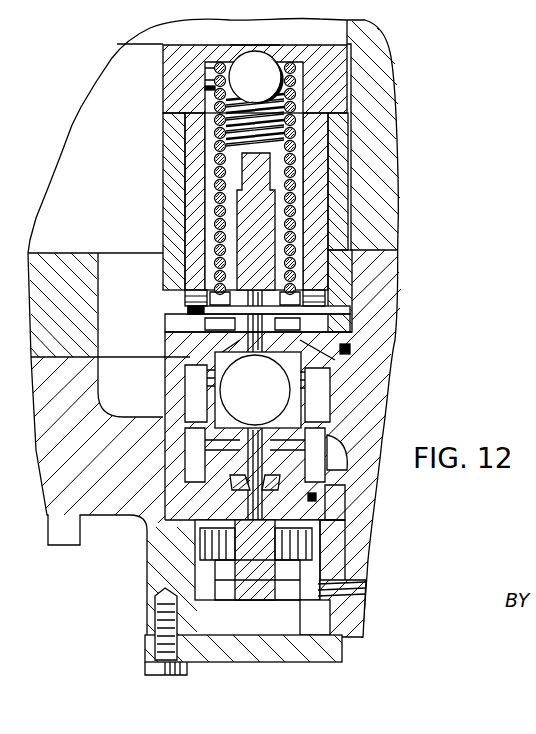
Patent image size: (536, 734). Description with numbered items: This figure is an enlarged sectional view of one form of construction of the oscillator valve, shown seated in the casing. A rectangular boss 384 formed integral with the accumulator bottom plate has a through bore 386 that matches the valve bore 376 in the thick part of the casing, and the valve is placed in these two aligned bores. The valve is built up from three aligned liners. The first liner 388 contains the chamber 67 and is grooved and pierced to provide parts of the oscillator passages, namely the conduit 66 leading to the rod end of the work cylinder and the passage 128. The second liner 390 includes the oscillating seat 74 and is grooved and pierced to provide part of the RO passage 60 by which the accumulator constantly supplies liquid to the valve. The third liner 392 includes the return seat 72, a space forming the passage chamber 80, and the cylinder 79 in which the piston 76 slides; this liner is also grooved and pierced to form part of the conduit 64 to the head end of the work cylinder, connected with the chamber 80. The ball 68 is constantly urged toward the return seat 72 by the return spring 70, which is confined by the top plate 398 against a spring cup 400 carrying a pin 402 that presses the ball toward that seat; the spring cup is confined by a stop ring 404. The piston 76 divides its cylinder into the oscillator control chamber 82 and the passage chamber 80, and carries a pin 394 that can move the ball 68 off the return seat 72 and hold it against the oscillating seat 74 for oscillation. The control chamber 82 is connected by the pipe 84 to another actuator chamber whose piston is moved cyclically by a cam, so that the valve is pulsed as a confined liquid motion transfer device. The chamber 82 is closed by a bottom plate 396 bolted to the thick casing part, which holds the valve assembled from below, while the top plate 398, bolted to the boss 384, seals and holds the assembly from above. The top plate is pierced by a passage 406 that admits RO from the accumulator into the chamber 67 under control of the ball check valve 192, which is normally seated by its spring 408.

The conduit 60 is at (99, 252).
The conduit 64 is at (336, 466).
The conduit 66 is at (332, 325).
The chamber 67 is at (190, 320).
The ball 68 is at (290, 392).
The return spring 70 is at (212, 70).
The return seat 72 is at (222, 420).
The oscillating seat 74 is at (278, 366).
The piston 76 is at (270, 575).
The cylinder 79 is at (175, 620).
The passage chamber 80 is at (300, 441).
The oscillator control chamber 82 is at (300, 622).
The pipe 84 is at (350, 598).
The oscillator passage 128 is at (200, 310).
The ball check valve 192 is at (266, 60).
The valve bore 376 is at (322, 545).
The rectangular boss 384 is at (172, 133).
The through bore 386 is at (190, 200).
The first liner 388 is at (325, 136).
The second liner 390 is at (325, 350).
The third liner 392 is at (352, 349).
The pin 394 is at (320, 518).
The bottom plate 396 is at (342, 650).
The top plate 398 is at (165, 56).
The spring cup 400 is at (300, 182).
The pin 402 is at (195, 366).
The stop ring 404 is at (322, 307).
The passage 406 is at (245, 45).
The spring 408 is at (210, 87).